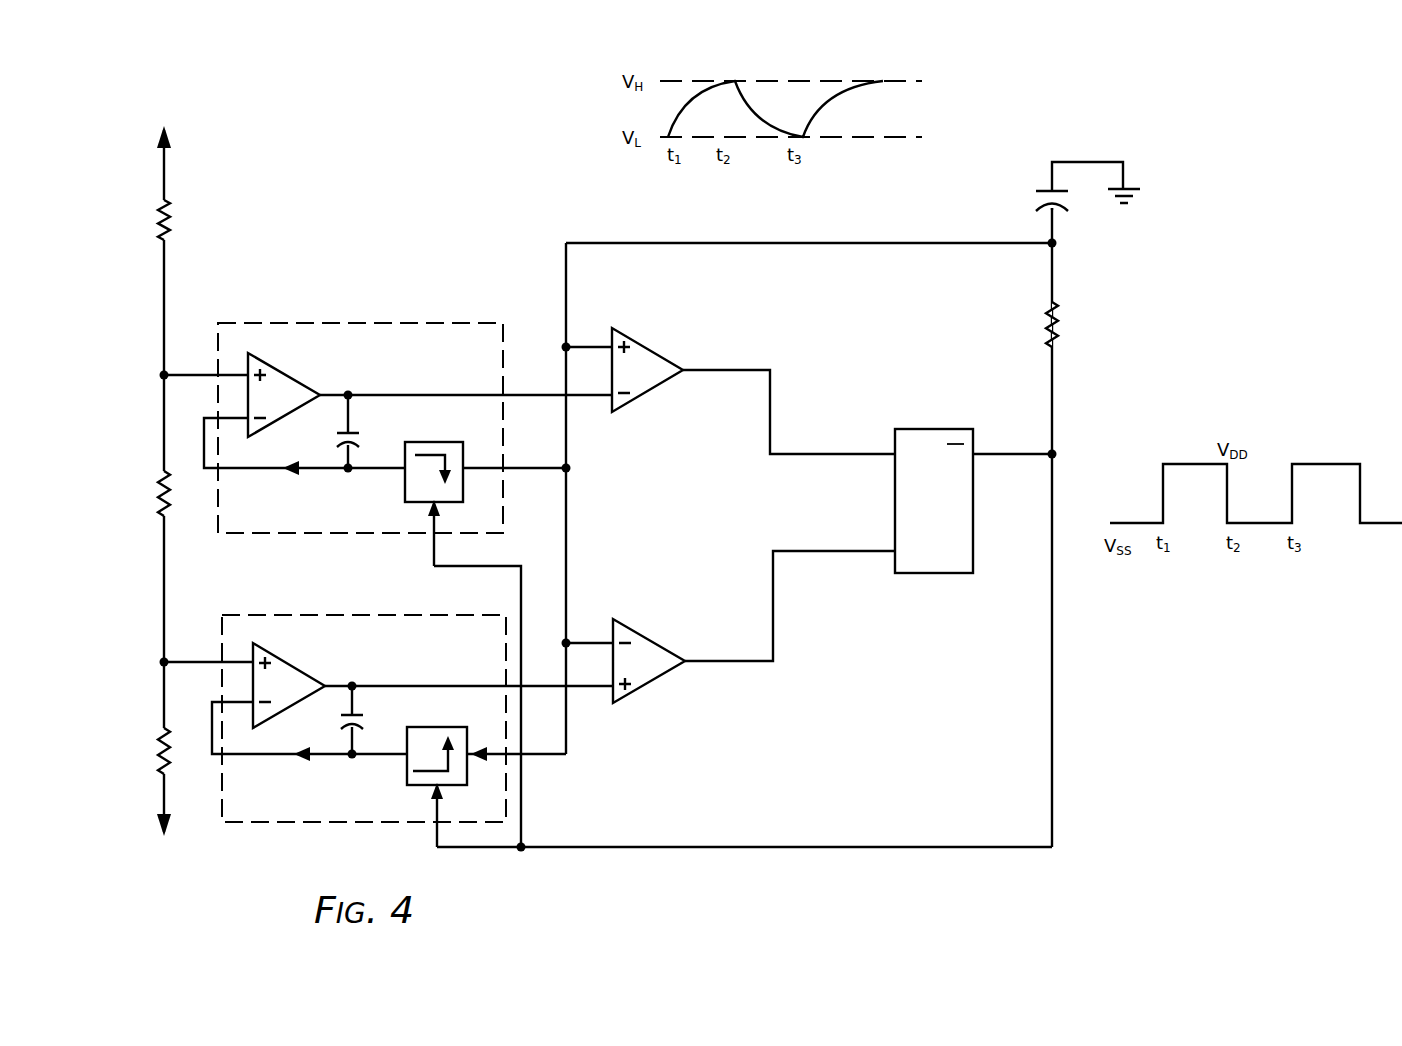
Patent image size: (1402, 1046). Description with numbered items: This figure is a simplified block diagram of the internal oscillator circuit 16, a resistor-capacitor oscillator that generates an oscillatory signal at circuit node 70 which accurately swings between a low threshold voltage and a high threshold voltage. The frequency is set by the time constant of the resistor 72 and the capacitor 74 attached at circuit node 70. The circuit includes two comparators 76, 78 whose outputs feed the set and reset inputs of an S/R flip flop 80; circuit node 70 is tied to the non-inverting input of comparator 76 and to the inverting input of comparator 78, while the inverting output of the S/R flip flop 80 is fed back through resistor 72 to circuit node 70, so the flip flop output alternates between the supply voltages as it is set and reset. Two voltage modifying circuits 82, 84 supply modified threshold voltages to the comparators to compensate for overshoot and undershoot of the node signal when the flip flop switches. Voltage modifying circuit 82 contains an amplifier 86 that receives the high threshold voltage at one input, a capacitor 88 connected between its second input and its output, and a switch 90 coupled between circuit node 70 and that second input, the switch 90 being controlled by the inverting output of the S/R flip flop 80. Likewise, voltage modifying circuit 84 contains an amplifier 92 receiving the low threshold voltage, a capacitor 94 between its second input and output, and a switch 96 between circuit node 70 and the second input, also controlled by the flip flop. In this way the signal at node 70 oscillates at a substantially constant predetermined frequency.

The internal oscillator circuit 16 is at (362, 136).
The circuit node 70 is at (1056, 245).
The resistor 72 is at (1068, 322).
The capacitor 74 is at (1036, 191).
The comparator 76 is at (653, 352).
The comparator 78 is at (647, 640).
The S/R flip flop 80 is at (933, 429).
The voltage modifying circuit 82 is at (350, 323).
The voltage modifying circuit 84 is at (355, 615).
The amplifier 86 is at (277, 372).
The capacitor 88 is at (338, 437).
The switch 90 is at (405, 492).
The amplifier 92 is at (303, 676).
The capacitor 94 is at (342, 722).
The switch 96 is at (407, 778).